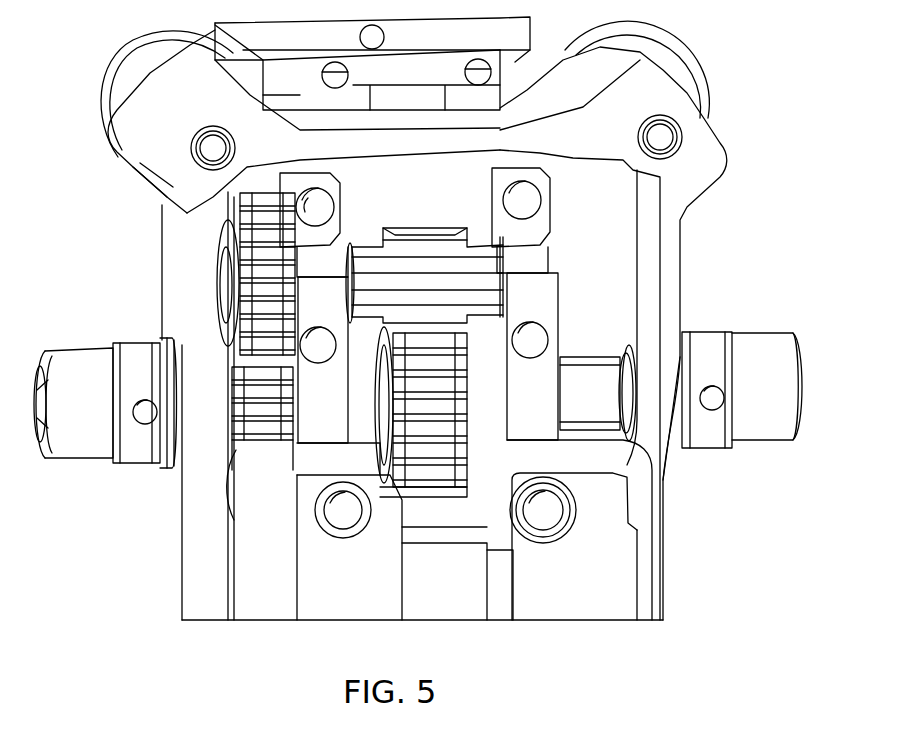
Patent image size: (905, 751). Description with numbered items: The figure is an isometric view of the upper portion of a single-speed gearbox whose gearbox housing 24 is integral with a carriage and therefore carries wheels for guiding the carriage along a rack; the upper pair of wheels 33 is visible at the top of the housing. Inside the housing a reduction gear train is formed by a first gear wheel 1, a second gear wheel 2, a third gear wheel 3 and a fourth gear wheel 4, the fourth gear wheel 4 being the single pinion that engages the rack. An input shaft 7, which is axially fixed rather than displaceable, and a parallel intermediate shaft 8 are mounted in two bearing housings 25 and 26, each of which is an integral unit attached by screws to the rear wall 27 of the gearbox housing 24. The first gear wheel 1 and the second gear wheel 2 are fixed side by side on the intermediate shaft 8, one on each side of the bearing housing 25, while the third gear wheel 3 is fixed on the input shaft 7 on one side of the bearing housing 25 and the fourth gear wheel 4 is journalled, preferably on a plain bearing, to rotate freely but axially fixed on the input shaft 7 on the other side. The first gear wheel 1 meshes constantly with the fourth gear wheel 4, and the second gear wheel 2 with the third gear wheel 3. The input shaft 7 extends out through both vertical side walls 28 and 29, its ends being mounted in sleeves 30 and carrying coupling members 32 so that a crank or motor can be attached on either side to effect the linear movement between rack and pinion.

The first gear wheel 1 is at (437, 262).
The second gear wheel 2 is at (260, 237).
The third gear wheel 3 is at (253, 418).
The fourth gear wheel (pinion) 4 is at (427, 463).
The input shaft 7 is at (590, 383).
The intermediate shaft 8 is at (222, 288).
The gearbox housing 24 is at (417, 318).
The bearing housing 25 is at (335, 258).
The bearing housing 26 is at (545, 247).
The rear wall 27 is at (468, 185).
The side wall 28 is at (190, 205).
The side wall 29 is at (672, 236).
The sleeve 30 is at (173, 465).
The coupling member 32 is at (80, 435).
The upper pair of wheels 33 is at (145, 70).